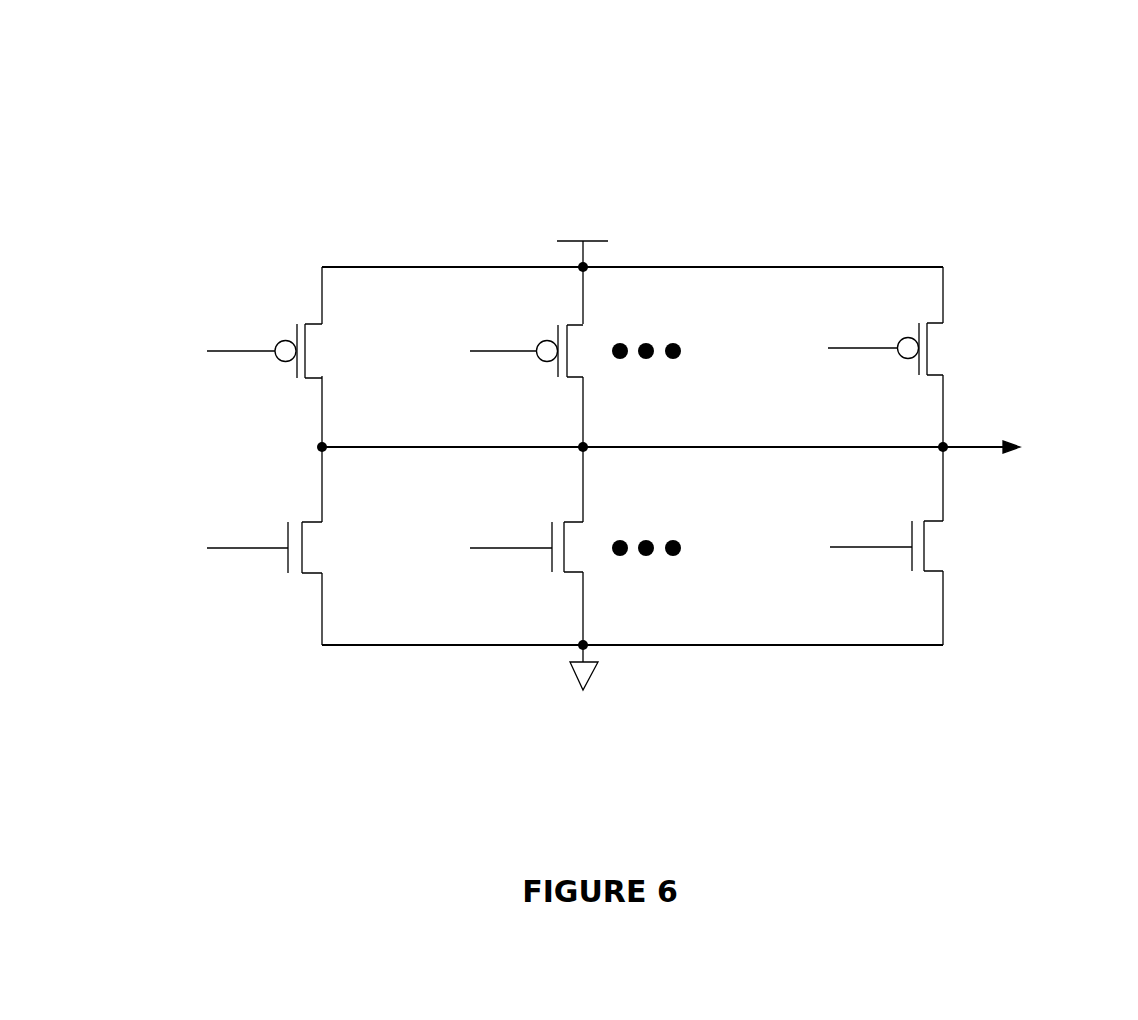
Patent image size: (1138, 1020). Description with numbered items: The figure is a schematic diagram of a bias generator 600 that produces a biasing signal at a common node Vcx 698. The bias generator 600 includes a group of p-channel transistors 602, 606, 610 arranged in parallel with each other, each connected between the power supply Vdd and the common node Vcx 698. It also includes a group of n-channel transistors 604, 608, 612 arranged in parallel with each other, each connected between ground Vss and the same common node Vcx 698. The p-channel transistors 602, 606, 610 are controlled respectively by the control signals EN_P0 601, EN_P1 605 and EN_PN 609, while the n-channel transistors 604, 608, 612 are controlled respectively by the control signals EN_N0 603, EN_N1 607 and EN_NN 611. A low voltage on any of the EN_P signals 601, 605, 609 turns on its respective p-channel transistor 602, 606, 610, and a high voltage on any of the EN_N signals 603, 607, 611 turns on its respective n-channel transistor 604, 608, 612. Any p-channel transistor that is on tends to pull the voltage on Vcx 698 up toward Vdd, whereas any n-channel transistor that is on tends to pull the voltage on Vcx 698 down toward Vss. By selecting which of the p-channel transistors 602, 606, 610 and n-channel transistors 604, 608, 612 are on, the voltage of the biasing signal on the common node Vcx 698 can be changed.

The bias generator 600 is at (1025, 135).
The control signal EN_P0 601 is at (236, 350).
The p-channel transistor 602 is at (297, 367).
The control signal EN_N0 603 is at (236, 547).
The n-channel transistor 604 is at (288, 565).
The control signal EN_P1 605 is at (496, 350).
The p-channel transistor 606 is at (558, 366).
The control signal EN_N1 607 is at (497, 547).
The n-channel transistor 608 is at (552, 564).
The control signal EN_PN 609 is at (860, 347).
The p-channel transistor 610 is at (919, 364).
The control signal EN_NN 611 is at (860, 546).
The n-channel transistor 612 is at (912, 563).
The common node Vcx 698 is at (981, 444).